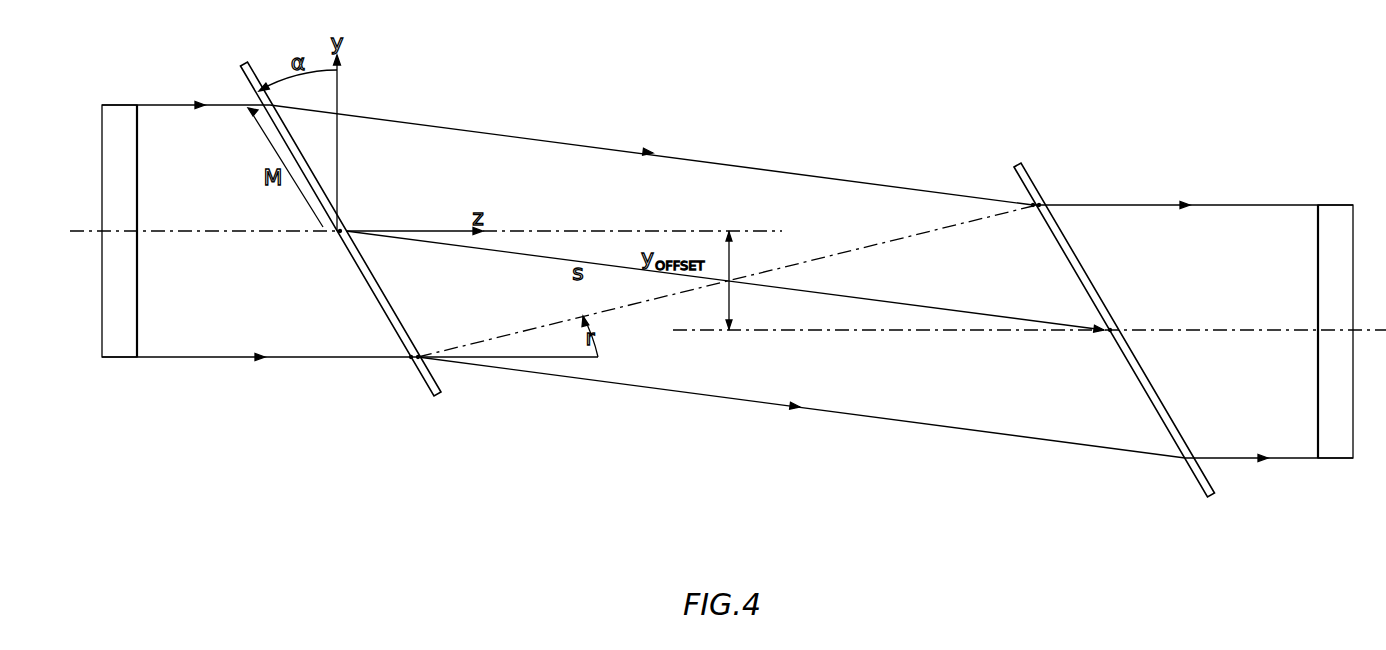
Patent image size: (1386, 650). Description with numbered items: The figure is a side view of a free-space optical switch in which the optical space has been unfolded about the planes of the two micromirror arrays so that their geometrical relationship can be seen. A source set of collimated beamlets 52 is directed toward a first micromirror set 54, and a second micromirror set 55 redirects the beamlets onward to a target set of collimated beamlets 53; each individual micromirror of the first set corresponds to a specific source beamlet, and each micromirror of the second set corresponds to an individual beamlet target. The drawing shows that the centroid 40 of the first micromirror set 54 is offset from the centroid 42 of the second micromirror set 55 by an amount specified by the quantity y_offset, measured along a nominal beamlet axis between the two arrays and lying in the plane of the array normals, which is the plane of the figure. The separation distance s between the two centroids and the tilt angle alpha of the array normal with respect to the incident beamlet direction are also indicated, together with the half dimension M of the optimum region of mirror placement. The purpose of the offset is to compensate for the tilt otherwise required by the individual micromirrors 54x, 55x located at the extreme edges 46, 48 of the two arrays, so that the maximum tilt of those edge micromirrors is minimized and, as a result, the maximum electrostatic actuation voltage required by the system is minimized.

The centroid of first micromirror array 40 is at (346, 224).
The centroid of second micromirror array 42 is at (1124, 322).
The extreme edge of first micromirror array 46 is at (398, 364).
The extreme edge of second micromirror array 48 is at (1027, 209).
The source set of collimated beamlets 52 is at (120, 358).
The target set of collimated beamlets 53 is at (1333, 460).
The first micromirror set 54 is at (432, 398).
The micromirror at extreme edge of first array 54x is at (422, 348).
The second micromirror set 55 is at (1207, 498).
The micromirror at extreme edge of second array 55x is at (1051, 196).